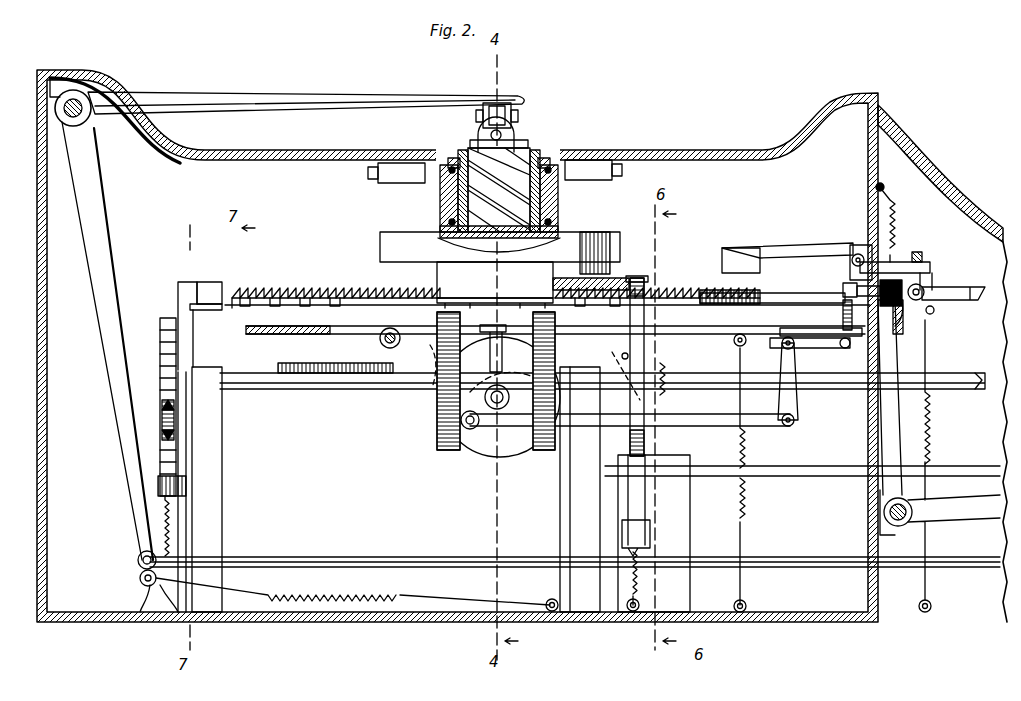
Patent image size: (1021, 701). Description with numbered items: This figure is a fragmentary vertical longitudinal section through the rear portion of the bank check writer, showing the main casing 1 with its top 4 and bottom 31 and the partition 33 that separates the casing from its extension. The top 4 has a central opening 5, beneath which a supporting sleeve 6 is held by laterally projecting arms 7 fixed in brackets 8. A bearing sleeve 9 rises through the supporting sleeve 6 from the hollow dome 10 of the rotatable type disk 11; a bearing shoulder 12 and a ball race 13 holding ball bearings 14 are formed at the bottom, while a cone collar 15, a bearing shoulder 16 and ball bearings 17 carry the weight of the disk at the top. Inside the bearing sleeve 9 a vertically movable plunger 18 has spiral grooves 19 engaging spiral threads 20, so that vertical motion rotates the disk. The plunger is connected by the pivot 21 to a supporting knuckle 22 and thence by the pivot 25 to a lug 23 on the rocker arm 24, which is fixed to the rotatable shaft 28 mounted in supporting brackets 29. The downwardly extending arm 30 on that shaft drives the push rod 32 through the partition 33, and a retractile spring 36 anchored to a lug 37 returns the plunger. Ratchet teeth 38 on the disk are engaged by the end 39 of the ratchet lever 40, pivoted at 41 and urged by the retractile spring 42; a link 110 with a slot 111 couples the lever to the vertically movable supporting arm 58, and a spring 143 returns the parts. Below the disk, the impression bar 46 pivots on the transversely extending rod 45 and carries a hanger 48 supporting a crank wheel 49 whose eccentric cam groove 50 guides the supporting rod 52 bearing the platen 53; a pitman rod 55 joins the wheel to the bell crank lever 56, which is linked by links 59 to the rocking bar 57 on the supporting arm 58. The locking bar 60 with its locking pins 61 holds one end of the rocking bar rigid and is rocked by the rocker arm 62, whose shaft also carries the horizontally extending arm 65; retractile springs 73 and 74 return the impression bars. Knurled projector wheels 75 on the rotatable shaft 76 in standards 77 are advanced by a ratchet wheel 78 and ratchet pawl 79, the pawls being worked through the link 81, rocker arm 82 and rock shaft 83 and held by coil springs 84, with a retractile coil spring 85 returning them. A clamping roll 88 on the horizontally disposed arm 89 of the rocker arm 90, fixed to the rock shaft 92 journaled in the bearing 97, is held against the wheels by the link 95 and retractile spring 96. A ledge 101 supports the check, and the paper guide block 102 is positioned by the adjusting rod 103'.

The main casing 1 is at (37, 245).
The top 4 is at (360, 158).
The opening 5 is at (446, 165).
The supporting sleeve 6 is at (440, 190).
The laterally projecting arms 7 is at (370, 175).
The brackets 8 is at (398, 176).
The bearing sleeve 9 is at (552, 200).
The hollow dome 10 is at (604, 232).
The rotatable type disk 11 is at (538, 279).
The bearing shoulder 12 is at (448, 218).
The ball race 13 is at (455, 240).
The ball bearings 14 is at (552, 228).
The cone collar 15 is at (455, 160).
The bearing shoulder 16 is at (579, 172).
The ball bearings 17 is at (540, 170).
The vertically movable plunger 18 is at (492, 232).
The spiral grooves 19 is at (505, 232).
The spiral threads 20 is at (552, 208).
The pivot 21 is at (504, 134).
The supporting knuckle 22 is at (492, 108).
The lug 23 is at (500, 108).
The rocker arm 24 is at (240, 95).
The pivot 25 is at (476, 113).
The rotatable shaft 28 is at (55, 108).
The supporting brackets 29 is at (56, 82).
The downwardly extending arm 30 is at (105, 352).
The bottom 31 is at (437, 612).
The push rod 32 is at (372, 557).
The partition 33 is at (870, 518).
The retractile spring 36 is at (340, 603).
The lug 37 is at (566, 615).
The ratchet teeth 38 is at (547, 281).
The end of ratchet lever 39 is at (722, 262).
The ratchet lever 40 is at (797, 250).
The pivot 41 is at (857, 254).
The retractile spring 42 is at (896, 232).
The transversely extending rod 45 is at (386, 330).
The impression bar 46 is at (686, 330).
The hanger 48 is at (437, 378).
The crank wheel 49 is at (515, 450).
The eccentric cam groove 50 is at (500, 364).
The supporting rod 52 is at (490, 386).
The platen 53 is at (498, 326).
The pitman rod 55 is at (668, 428).
The bell crank lever 56 is at (796, 396).
The rocking bar 57 is at (772, 295).
The vertically movable supporting arm 58 is at (947, 301).
The links 59 is at (840, 315).
The locking bar 60 is at (898, 308).
The locking pins 61 is at (843, 285).
The rocker arm 62 is at (878, 425).
The horizontally extending arm 65 is at (982, 510).
The retractile spring 73 is at (665, 392).
The retractile spring 74 is at (745, 450).
The projector wheels 75 is at (446, 446).
The rotatable shaft 76 is at (302, 389).
The standards 77 is at (222, 437).
The ratchet wheel 78 is at (180, 333).
The ratchet pawl 79 is at (188, 465).
The link 81 is at (158, 483).
The rocker arm 82 is at (178, 304).
The rock shaft 83 is at (225, 284).
The coil spring 84 is at (160, 432).
The retractile coil spring 85 is at (158, 540).
The clamping roll 88 is at (437, 268).
The horizontally disposed arm 89 is at (634, 276).
The rocker arm 90 is at (628, 348).
The rock shaft 92 is at (748, 510).
The link 95 is at (622, 520).
The retractile spring 96 is at (630, 578).
The bearing 97 is at (690, 527).
The ledge 101 is at (278, 318).
The paper guide block 102 is at (326, 360).
The adjusting rod 103' is at (965, 366).
The link 110 is at (922, 258).
The slot 111 is at (932, 268).
The spring 143 is at (935, 425).